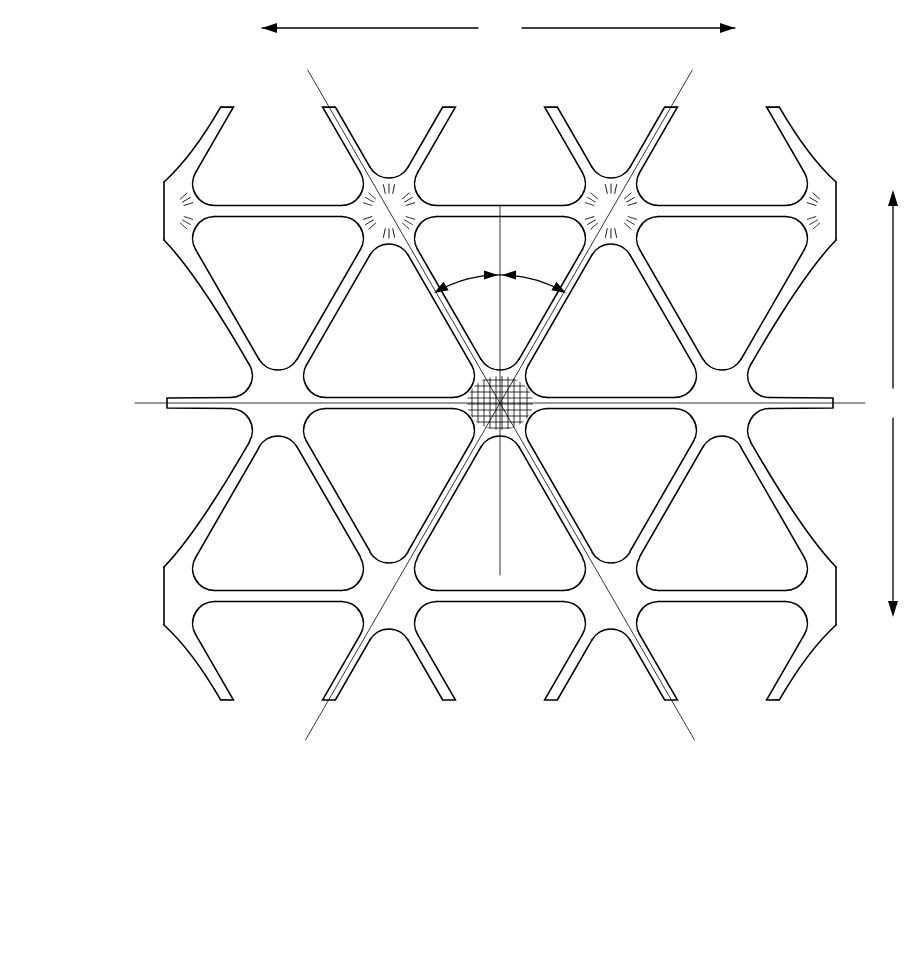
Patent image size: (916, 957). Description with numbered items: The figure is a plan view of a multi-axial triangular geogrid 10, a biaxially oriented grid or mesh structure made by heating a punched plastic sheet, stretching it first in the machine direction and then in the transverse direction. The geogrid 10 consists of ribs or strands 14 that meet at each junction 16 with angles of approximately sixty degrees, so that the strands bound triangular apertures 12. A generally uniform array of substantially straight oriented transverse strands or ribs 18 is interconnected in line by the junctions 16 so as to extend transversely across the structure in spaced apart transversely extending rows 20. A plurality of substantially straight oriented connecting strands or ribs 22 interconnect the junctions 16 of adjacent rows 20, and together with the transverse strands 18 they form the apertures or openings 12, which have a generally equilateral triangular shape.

The triangular geogrid 10 is at (166, 127).
The triangular apertures 12 is at (273, 483).
The ribs or strands 14 is at (770, 303).
The junction 16 is at (612, 582).
The transverse strands or ribs 18 is at (248, 590).
The transversely extending rows 20 is at (118, 596).
The connecting strands or ribs 22 is at (432, 510).